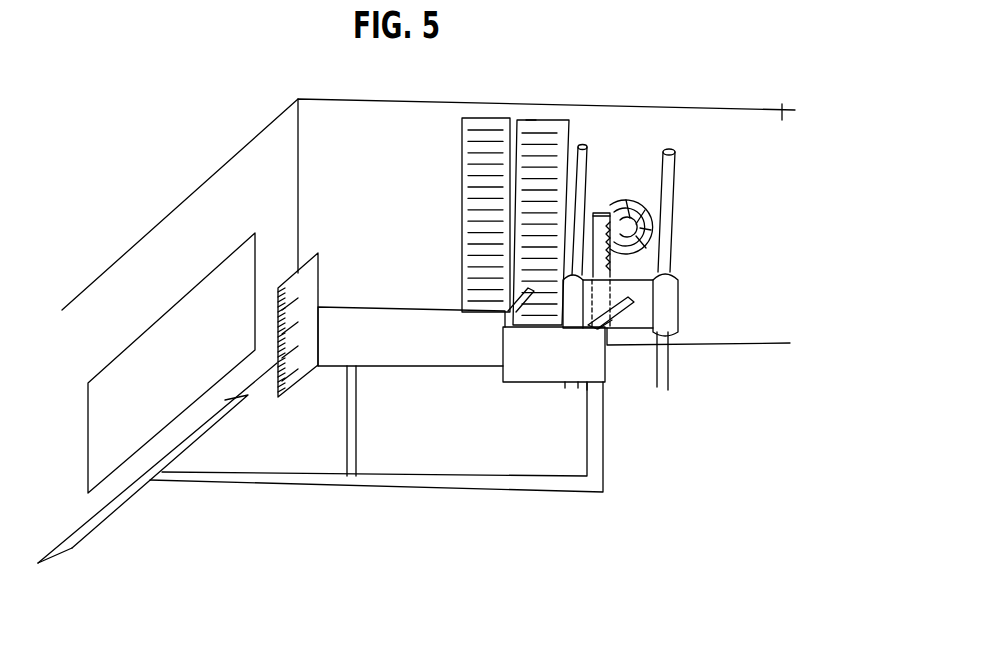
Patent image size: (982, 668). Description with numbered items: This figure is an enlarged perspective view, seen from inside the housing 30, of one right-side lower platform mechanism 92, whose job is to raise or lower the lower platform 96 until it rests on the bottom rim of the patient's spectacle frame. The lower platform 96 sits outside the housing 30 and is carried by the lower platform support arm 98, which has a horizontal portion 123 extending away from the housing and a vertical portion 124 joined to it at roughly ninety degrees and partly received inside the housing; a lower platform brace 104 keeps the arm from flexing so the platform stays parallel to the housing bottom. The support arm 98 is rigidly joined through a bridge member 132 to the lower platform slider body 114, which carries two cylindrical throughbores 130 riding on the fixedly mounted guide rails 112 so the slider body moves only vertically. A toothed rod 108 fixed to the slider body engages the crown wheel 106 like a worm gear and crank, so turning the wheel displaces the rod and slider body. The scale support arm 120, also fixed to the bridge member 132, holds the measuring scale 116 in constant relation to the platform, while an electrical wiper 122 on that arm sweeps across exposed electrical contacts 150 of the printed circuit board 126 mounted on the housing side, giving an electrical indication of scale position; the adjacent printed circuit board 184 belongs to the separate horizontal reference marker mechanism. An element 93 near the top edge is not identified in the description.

The housing 30 is at (228, 178).
The lower platform mechanism 92 is at (467, 589).
The top plate edge 93 is at (782, 120).
The lower platform 96 is at (135, 482).
The lower platform support arm 98 is at (517, 490).
The lower platform brace 104 is at (343, 441).
The crown wheel 106 is at (637, 200).
The toothed rod 108 is at (598, 213).
The guide rails 112 is at (587, 160).
The lower platform slider body 114 is at (634, 317).
The measuring scale 116 is at (320, 258).
The scale support arm 120 is at (515, 370).
The electrical wiper 122 is at (523, 127).
The horizontal portion 123 is at (392, 506).
The vertical portion 124 is at (603, 463).
The printed circuit board 126 is at (531, 120).
The cylindrical throughbores 130 is at (678, 277).
The bridge member 132 is at (610, 320).
The exposed electrical contacts 150 is at (548, 148).
The printed circuit board 184 is at (472, 130).